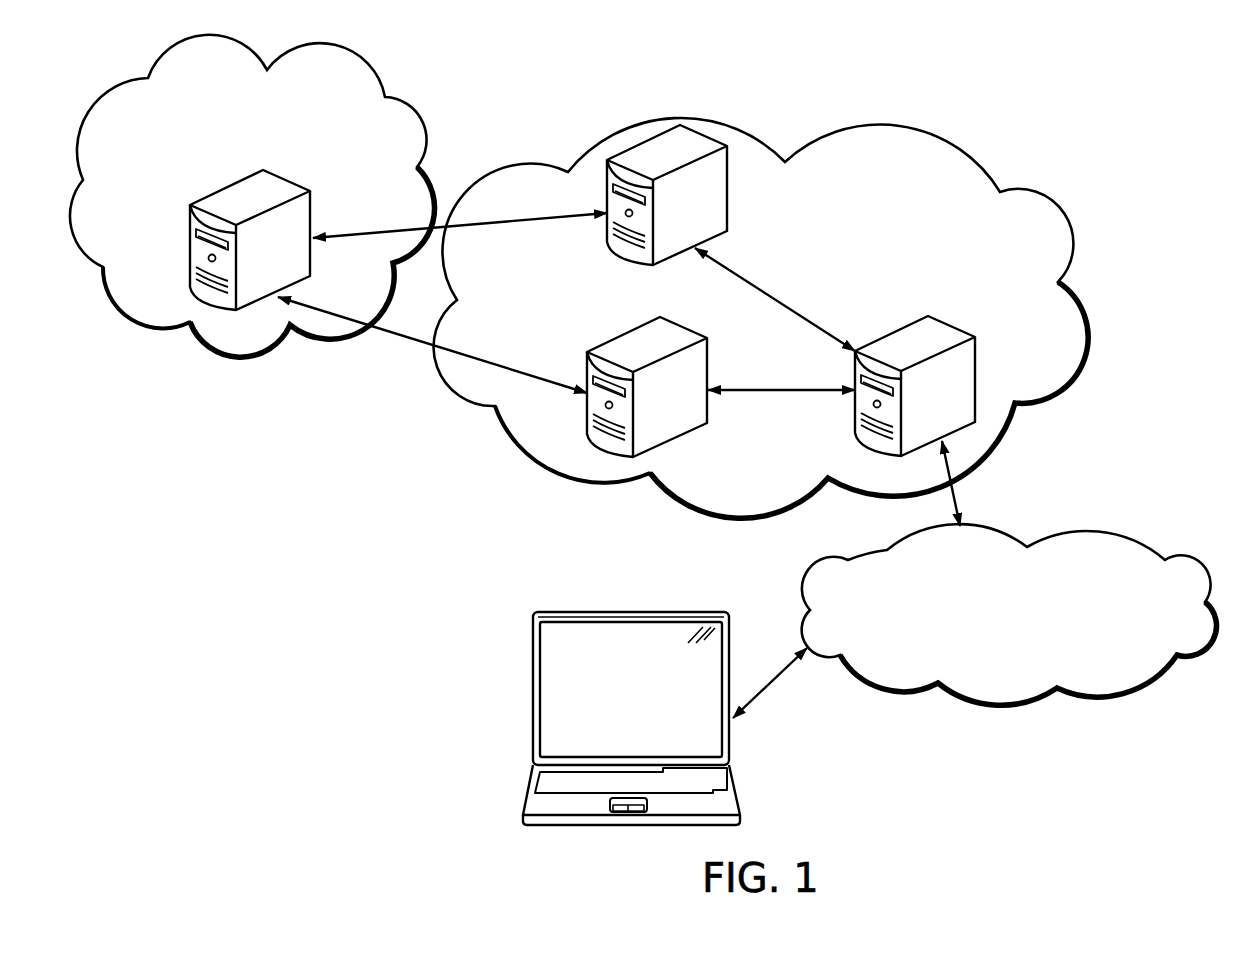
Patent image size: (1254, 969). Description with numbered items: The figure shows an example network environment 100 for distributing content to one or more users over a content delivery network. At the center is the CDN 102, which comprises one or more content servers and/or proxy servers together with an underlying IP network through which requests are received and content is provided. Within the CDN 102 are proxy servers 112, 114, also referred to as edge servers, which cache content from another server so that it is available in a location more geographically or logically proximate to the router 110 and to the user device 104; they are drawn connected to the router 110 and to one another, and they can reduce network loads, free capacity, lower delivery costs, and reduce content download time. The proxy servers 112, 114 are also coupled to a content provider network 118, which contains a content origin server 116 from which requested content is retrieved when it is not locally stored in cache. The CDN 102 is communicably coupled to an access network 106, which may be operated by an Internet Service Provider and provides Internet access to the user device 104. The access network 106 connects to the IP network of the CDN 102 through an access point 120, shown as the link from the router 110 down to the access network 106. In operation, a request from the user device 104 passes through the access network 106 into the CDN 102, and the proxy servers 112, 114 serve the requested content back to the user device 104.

The network environment 100 is at (1133, 168).
The content delivery network (CDN) 102 is at (761, 318).
The user device 104 is at (730, 745).
The access network 106 is at (1009, 614).
The router 110 is at (975, 366).
The proxy server 112 is at (617, 337).
The proxy server 114 is at (730, 173).
The content origin server 116 is at (190, 250).
The content provider network 118 is at (252, 196).
The access point 120 is at (961, 498).